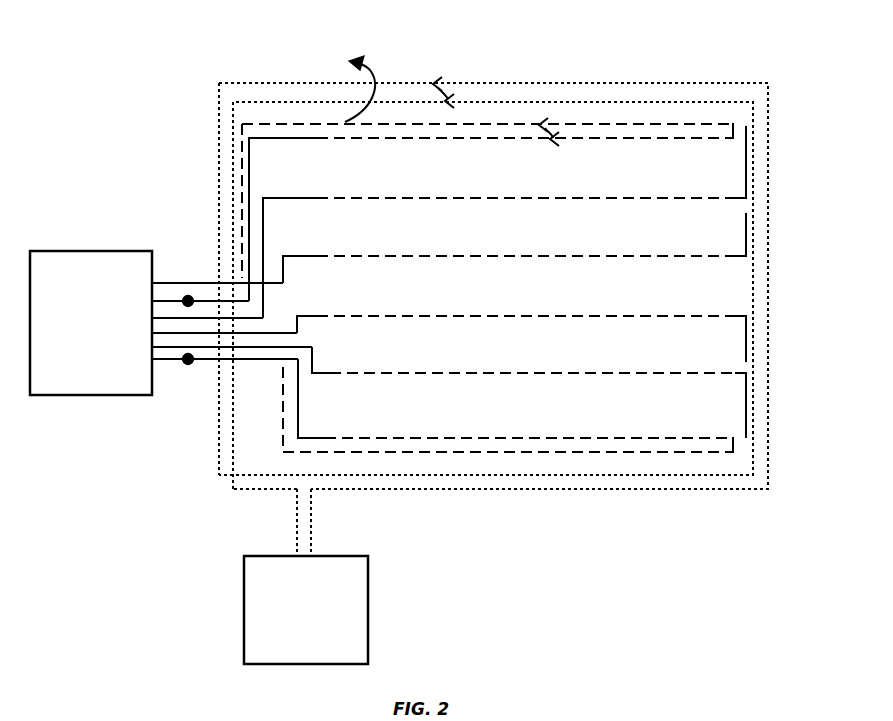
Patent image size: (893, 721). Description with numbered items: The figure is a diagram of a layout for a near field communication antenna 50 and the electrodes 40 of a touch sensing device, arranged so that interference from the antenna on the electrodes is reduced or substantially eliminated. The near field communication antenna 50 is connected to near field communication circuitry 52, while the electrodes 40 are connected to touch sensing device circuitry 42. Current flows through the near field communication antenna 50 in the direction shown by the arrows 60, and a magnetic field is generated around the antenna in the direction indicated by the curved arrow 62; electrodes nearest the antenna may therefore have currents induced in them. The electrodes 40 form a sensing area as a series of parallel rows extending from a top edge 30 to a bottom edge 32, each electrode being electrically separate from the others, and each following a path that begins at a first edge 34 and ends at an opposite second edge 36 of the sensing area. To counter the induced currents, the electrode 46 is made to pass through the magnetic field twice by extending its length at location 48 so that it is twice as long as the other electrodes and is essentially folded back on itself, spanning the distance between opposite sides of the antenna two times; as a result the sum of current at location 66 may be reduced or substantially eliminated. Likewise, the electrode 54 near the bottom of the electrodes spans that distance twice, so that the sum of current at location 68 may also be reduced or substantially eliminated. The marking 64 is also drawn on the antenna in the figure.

The top edge 30 is at (495, 82).
The bottom edge 32 is at (515, 502).
The first edge 34 is at (248, 415).
The second edge 36 is at (740, 303).
The electrodes 40 is at (693, 316).
The touch sensing device circuitry 42 is at (77, 251).
The electrode 46 is at (664, 123).
The location 48 is at (735, 132).
The near field communication antenna 50 is at (572, 491).
The near field communication circuitry 52 is at (368, 608).
The electrode 54 is at (662, 452).
The arrows 60 is at (436, 82).
The curved arrow 62 is at (345, 122).
The radiation 64 is at (545, 122).
The location 66 is at (188, 296).
The location 68 is at (188, 364).